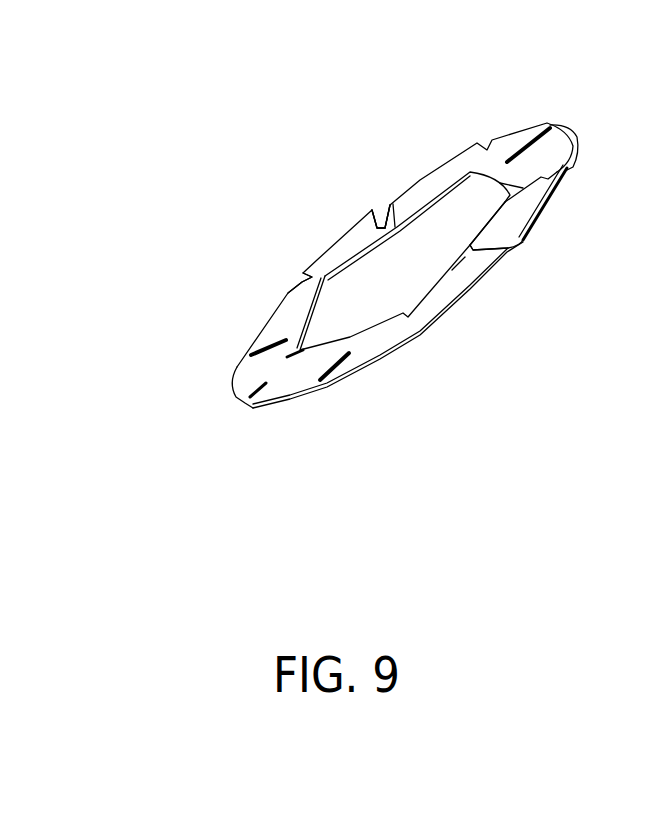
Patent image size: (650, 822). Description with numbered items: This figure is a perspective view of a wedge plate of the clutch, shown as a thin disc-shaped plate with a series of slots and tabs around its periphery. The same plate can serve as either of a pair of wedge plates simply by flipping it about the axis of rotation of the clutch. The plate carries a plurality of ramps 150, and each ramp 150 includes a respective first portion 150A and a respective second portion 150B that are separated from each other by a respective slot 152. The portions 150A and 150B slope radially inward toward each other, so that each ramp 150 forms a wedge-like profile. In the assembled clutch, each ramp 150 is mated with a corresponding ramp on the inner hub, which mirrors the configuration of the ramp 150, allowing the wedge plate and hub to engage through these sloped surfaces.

The slot 152 is at (388, 202).
The ramp portion 150A is at (358, 252).
The ramp portion 150B is at (322, 295).
The ramp 150 is at (462, 197).